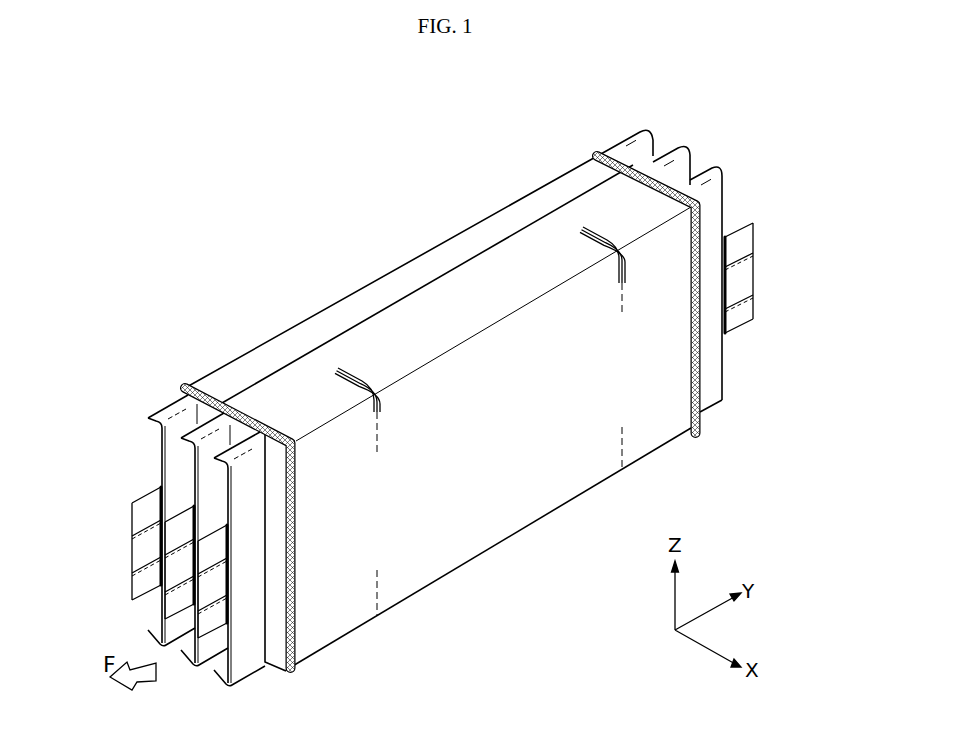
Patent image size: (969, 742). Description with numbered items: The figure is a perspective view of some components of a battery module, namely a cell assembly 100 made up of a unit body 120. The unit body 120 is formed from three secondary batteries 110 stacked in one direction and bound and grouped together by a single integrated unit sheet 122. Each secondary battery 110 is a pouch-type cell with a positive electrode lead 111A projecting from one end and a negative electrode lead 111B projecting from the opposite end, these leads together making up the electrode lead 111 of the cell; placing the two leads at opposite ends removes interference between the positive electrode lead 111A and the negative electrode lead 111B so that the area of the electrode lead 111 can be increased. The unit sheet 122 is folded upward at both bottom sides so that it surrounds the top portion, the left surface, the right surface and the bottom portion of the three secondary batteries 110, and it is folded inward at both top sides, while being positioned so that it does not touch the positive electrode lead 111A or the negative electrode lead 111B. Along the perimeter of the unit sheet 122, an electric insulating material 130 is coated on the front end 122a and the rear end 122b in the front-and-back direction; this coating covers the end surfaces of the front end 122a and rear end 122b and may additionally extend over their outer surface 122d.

The cell assembly 100 is at (209, 243).
The secondary battery 110 is at (715, 172).
The electrode lead 111 is at (510, 74).
The positive electrode lead 111A is at (138, 548).
The negative electrode lead 111B is at (745, 238).
The unit body 120 is at (234, 349).
The unit sheet 122 is at (313, 314).
The front end 122a is at (265, 663).
The rear end 122b is at (702, 370).
The outer surface 122d is at (483, 515).
The electric insulating material 130 is at (291, 627).